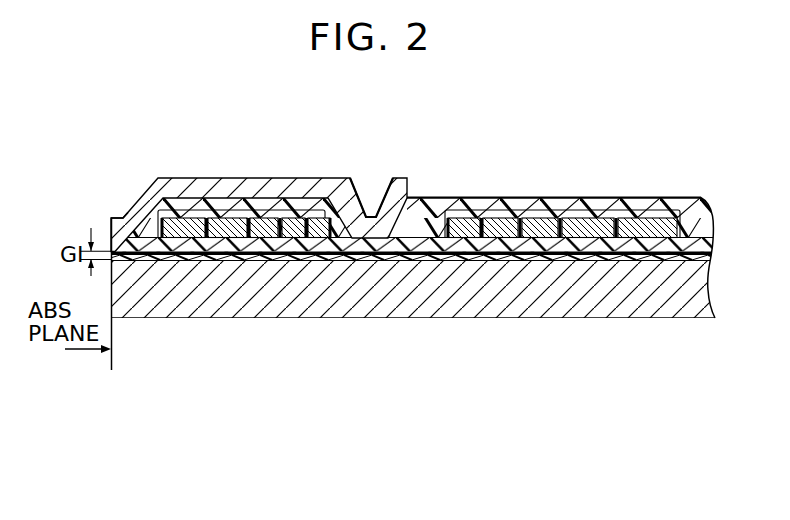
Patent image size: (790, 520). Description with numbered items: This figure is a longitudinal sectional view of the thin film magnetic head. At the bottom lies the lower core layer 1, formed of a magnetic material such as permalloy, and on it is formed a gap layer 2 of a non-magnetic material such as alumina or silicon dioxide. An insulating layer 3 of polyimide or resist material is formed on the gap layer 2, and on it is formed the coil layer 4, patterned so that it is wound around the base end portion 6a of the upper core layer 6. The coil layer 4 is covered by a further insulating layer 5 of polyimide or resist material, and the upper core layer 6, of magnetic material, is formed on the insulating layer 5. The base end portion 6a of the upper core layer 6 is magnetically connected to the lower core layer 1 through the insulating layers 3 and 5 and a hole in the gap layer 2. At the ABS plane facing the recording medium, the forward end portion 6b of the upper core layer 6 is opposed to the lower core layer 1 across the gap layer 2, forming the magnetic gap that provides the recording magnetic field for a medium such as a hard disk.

The lower core layer 1 is at (200, 278).
The gap layer 2 is at (268, 259).
The insulating layer 3 is at (141, 234).
The coil layer 4 is at (237, 212).
The insulating layer 5 is at (188, 203).
The upper core layer 6 is at (313, 188).
The base end portion 6a is at (373, 215).
The forward end portion 6b is at (122, 216).